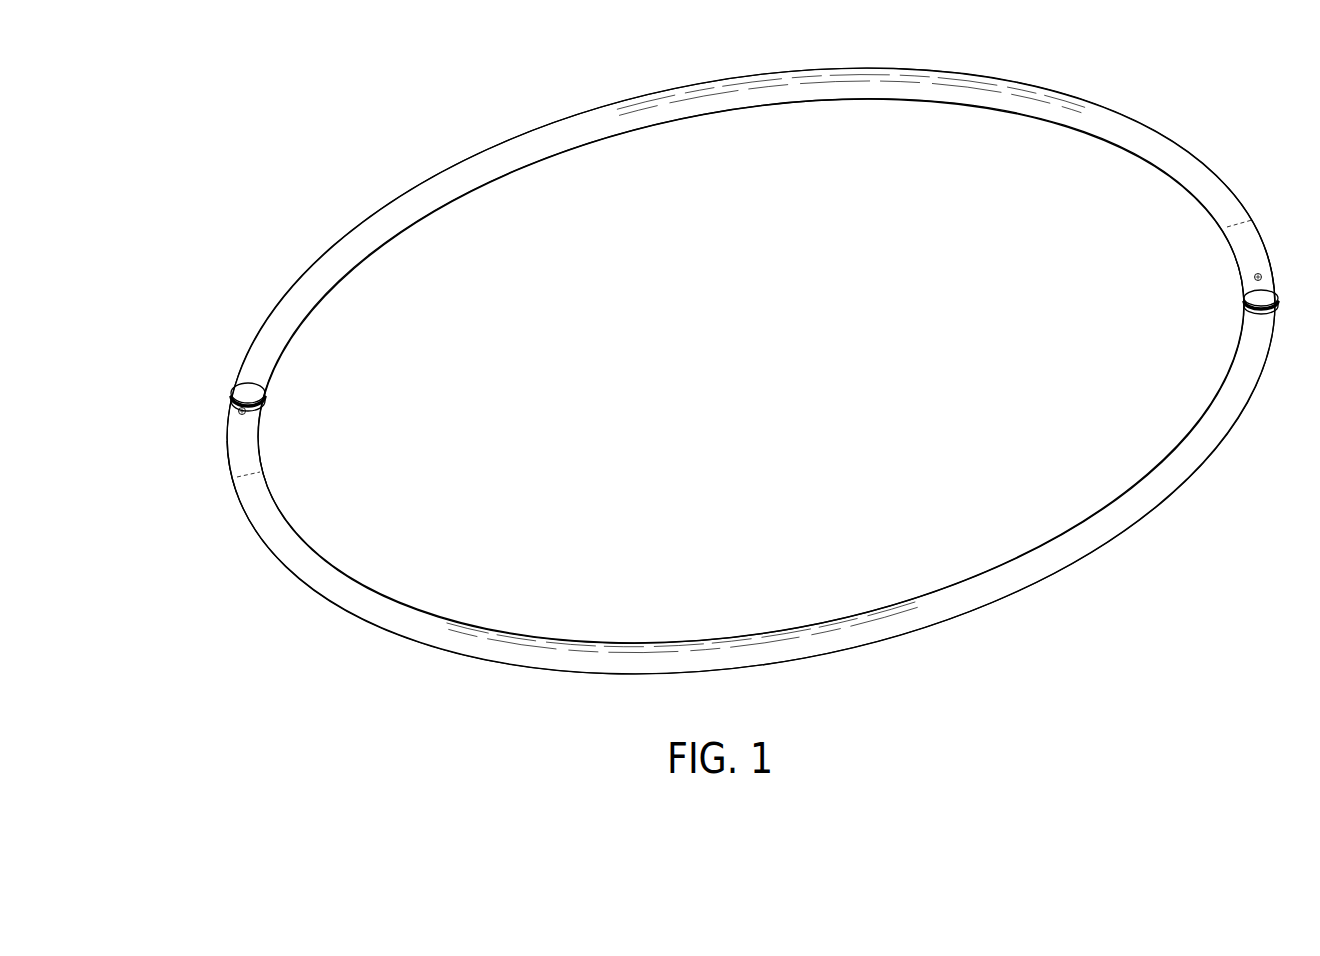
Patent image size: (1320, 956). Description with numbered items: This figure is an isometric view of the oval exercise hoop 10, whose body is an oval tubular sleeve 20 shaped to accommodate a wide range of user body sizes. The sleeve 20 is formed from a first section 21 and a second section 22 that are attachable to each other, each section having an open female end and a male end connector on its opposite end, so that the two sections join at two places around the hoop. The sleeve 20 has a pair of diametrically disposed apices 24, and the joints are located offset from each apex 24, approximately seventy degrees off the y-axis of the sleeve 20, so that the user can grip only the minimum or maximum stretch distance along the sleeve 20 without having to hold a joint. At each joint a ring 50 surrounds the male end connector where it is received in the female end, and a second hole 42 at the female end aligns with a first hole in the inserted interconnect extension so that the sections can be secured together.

The oval exercise hoop 10 is at (456, 118).
The oval tubular sleeve 20 is at (312, 263).
The first section 21 is at (381, 213).
The second section 22 is at (323, 585).
The apex 24 is at (247, 478).
The second hole 42 is at (238, 414).
The ring 50 is at (240, 382).